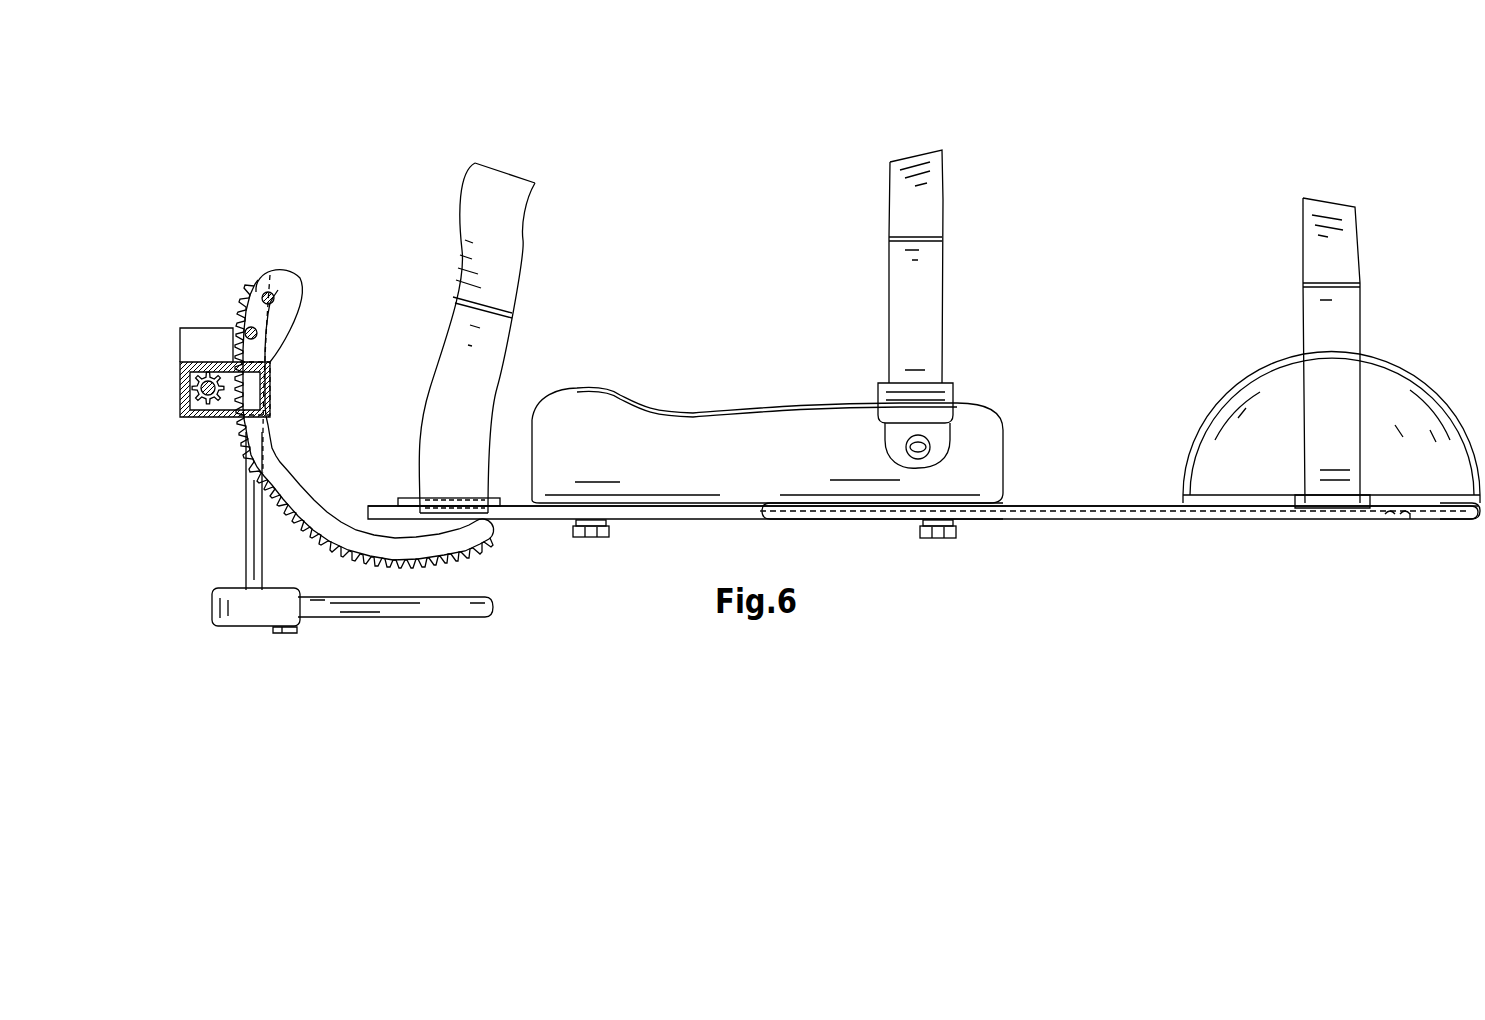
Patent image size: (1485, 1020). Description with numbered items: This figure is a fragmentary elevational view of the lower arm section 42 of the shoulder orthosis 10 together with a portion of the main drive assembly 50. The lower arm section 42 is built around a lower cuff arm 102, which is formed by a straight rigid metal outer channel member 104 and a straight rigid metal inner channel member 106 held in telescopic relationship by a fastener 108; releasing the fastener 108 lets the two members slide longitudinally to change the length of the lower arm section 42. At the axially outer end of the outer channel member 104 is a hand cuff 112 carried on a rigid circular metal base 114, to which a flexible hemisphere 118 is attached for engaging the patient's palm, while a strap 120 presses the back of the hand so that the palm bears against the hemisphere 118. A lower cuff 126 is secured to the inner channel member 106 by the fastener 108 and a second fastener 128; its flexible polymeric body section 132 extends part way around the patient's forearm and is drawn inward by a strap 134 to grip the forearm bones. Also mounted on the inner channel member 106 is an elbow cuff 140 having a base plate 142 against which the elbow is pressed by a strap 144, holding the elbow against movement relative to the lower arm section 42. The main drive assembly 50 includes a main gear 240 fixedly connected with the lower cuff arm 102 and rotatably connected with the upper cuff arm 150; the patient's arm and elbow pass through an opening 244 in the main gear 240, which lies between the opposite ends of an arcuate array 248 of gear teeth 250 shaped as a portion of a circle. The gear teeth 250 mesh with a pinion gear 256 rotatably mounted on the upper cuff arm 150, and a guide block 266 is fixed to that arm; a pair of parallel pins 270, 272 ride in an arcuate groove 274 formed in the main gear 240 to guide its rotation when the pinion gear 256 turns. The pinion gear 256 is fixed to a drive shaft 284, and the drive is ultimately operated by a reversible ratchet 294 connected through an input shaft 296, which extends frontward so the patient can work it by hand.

The shoulder orthosis 10 is at (422, 160).
The lower arm section 42 is at (1072, 150).
The main drive assembly 50 is at (354, 644).
The lower cuff arm 102 is at (1167, 520).
The outer channel member 104 is at (1095, 513).
The inner channel member 106 is at (705, 516).
The fastener 108 is at (940, 542).
The hand cuff 112 is at (1335, 192).
The base 114 is at (1473, 500).
The flexible hemisphere 118 is at (1273, 392).
The strap 120 is at (1337, 317).
The lower cuff 126 is at (823, 370).
The second fastener 128 is at (590, 540).
The body section 132 is at (768, 432).
The strap 134 is at (920, 293).
The elbow cuff 140 is at (507, 338).
The base plate 142 is at (497, 498).
The strap 144 is at (510, 197).
The upper cuff arm 150 is at (187, 439).
The main gear 240 is at (510, 548).
The opening 244 is at (408, 445).
The arcuate array 248 is at (498, 553).
The gear teeth 250 is at (363, 557).
The pinion gear 256 is at (207, 420).
The guide block 266 is at (210, 340).
The pin 270 is at (262, 330).
The pin 272 is at (280, 293).
The arcuate groove 274 is at (303, 478).
The drive shaft 284 is at (252, 387).
The reversible ratchet 294 is at (240, 625).
The input shaft 296 is at (257, 568).